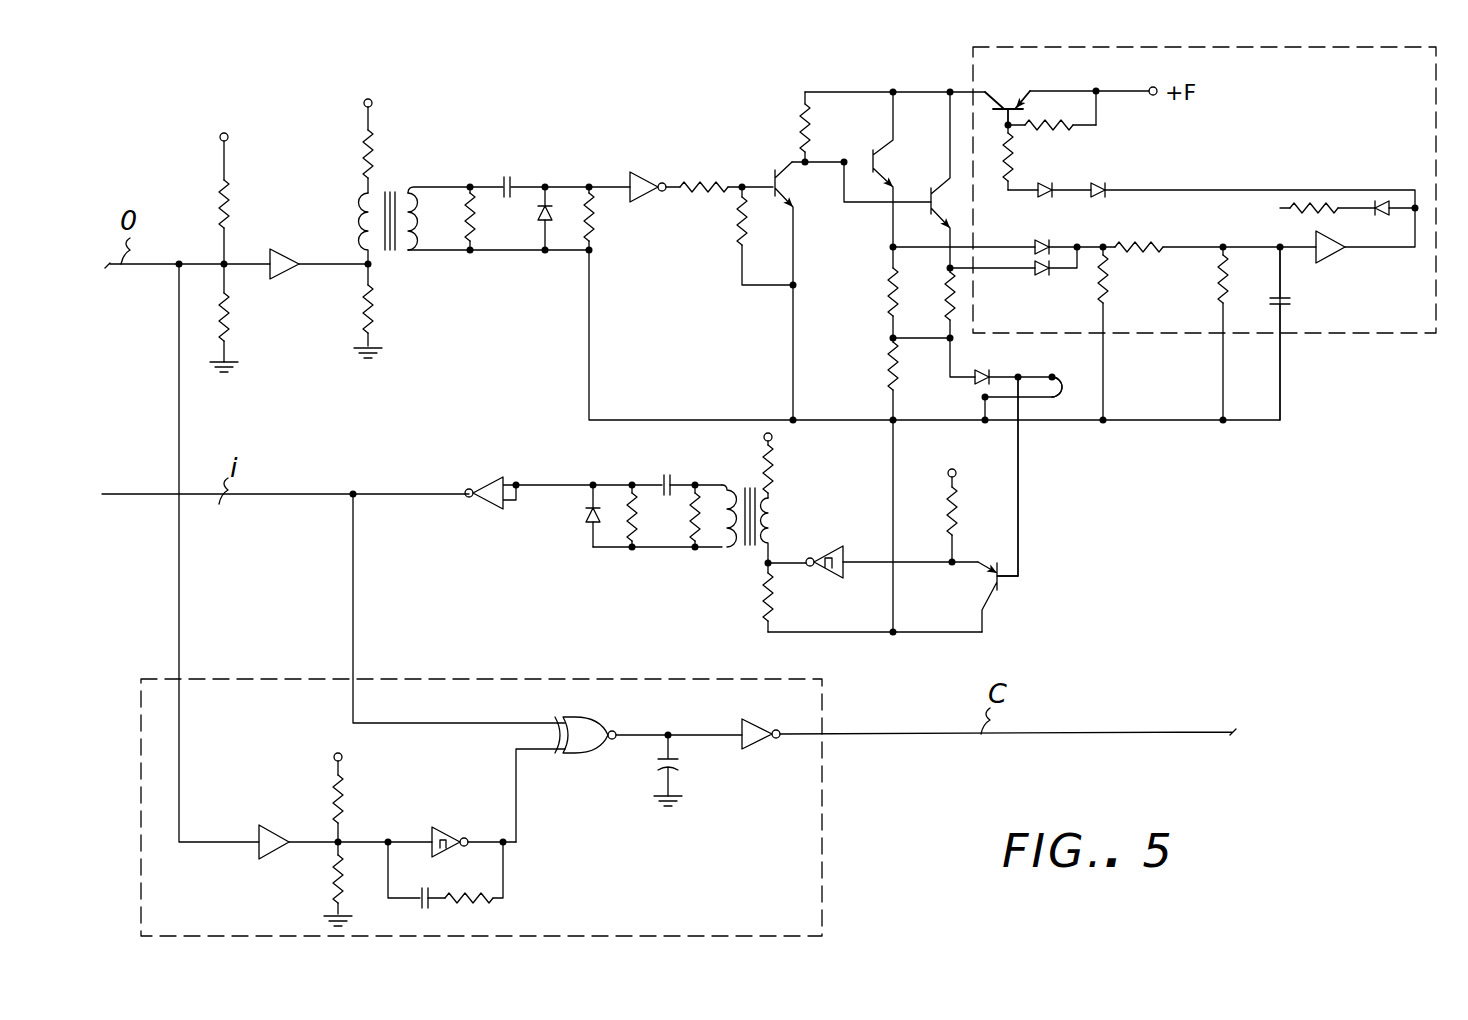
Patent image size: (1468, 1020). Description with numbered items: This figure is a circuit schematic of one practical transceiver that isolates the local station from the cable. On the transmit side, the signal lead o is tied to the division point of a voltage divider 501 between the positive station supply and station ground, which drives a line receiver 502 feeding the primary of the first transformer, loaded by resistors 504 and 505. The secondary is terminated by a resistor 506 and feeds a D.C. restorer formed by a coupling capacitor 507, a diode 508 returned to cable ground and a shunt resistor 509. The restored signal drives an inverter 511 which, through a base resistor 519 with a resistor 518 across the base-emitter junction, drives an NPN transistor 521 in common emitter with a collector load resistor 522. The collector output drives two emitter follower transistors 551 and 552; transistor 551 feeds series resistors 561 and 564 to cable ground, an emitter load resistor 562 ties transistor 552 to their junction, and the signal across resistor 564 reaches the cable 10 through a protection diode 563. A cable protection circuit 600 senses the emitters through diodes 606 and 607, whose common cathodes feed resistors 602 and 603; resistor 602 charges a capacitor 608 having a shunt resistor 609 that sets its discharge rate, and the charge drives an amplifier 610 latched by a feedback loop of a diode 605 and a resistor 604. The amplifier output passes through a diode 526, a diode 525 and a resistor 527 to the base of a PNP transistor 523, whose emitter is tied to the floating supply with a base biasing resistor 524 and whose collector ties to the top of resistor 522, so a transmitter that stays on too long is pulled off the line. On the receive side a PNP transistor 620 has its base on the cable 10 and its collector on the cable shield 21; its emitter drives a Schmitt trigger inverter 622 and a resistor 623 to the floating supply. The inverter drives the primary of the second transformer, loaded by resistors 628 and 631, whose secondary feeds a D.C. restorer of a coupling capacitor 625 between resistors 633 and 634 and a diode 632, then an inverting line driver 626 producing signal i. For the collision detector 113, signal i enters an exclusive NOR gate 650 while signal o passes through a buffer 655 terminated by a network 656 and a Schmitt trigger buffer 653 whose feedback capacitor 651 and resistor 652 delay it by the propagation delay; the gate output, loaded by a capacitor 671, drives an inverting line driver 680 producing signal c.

The voltage divider 501 is at (232, 200).
The line receiver 502 is at (290, 250).
The resistor 504 is at (382, 160).
The resistor 505 is at (366, 305).
The resistor 506 is at (476, 225).
The coupling capacitor 507 is at (535, 172).
The diode 508 is at (548, 230).
The resistor 509 is at (594, 217).
The inverter 511 is at (646, 173).
The resistor 518 is at (740, 229).
The base resistor 519 is at (698, 184).
The NPN transistor 521 is at (786, 185).
The collector load resistor 522 is at (810, 128).
The PNP transistor 523 is at (1016, 107).
The base biasing resistor 524 is at (1060, 127).
The diode 525 is at (1044, 198).
The diode 526 is at (1096, 198).
The resistor 527 is at (1014, 160).
The emitter follower transistor 551 is at (880, 162).
The emitter follower transistor 552 is at (945, 198).
The resistor 561 is at (890, 292).
The emitter load resistor 562 is at (956, 295).
The protection diode 563 is at (980, 371).
The resistor 564 is at (892, 373).
The cable protection circuit 600 is at (1338, 335).
The resistor 602 is at (1140, 247).
The resistor 603 is at (1108, 290).
The resistor 604 is at (1314, 202).
The diode 605 is at (1384, 202).
The diode 606 is at (1036, 240).
The diode 607 is at (1046, 275).
The capacitor 608 is at (1286, 298).
The shunt resistor 609 is at (1220, 305).
The amplifier 610 is at (1334, 256).
The PNP transistor 620 is at (1000, 585).
The Schmitt trigger inverter 622 is at (831, 548).
The resistor 623 is at (947, 520).
The coupling capacitor 625 is at (660, 478).
The inverting line driver 626 is at (483, 480).
The load resistor 628 is at (775, 465).
The load resistor 631 is at (775, 598).
The diode 632 is at (585, 515).
The resistor 633 is at (628, 535).
The resistor 634 is at (692, 535).
The exclusive NOR gate 650 is at (594, 724).
The capacitor 651 is at (418, 904).
The resistor 652 is at (480, 905).
The Schmitt trigger buffer 653 is at (440, 826).
The buffer 655 is at (266, 828).
The network 656 is at (368, 785).
The capacitor 671 is at (658, 760).
The inverting line driver 680 is at (775, 712).
The collision detector 113 is at (826, 827).
The cable 10 is at (1052, 377).
The cable shield 21 is at (1054, 378).